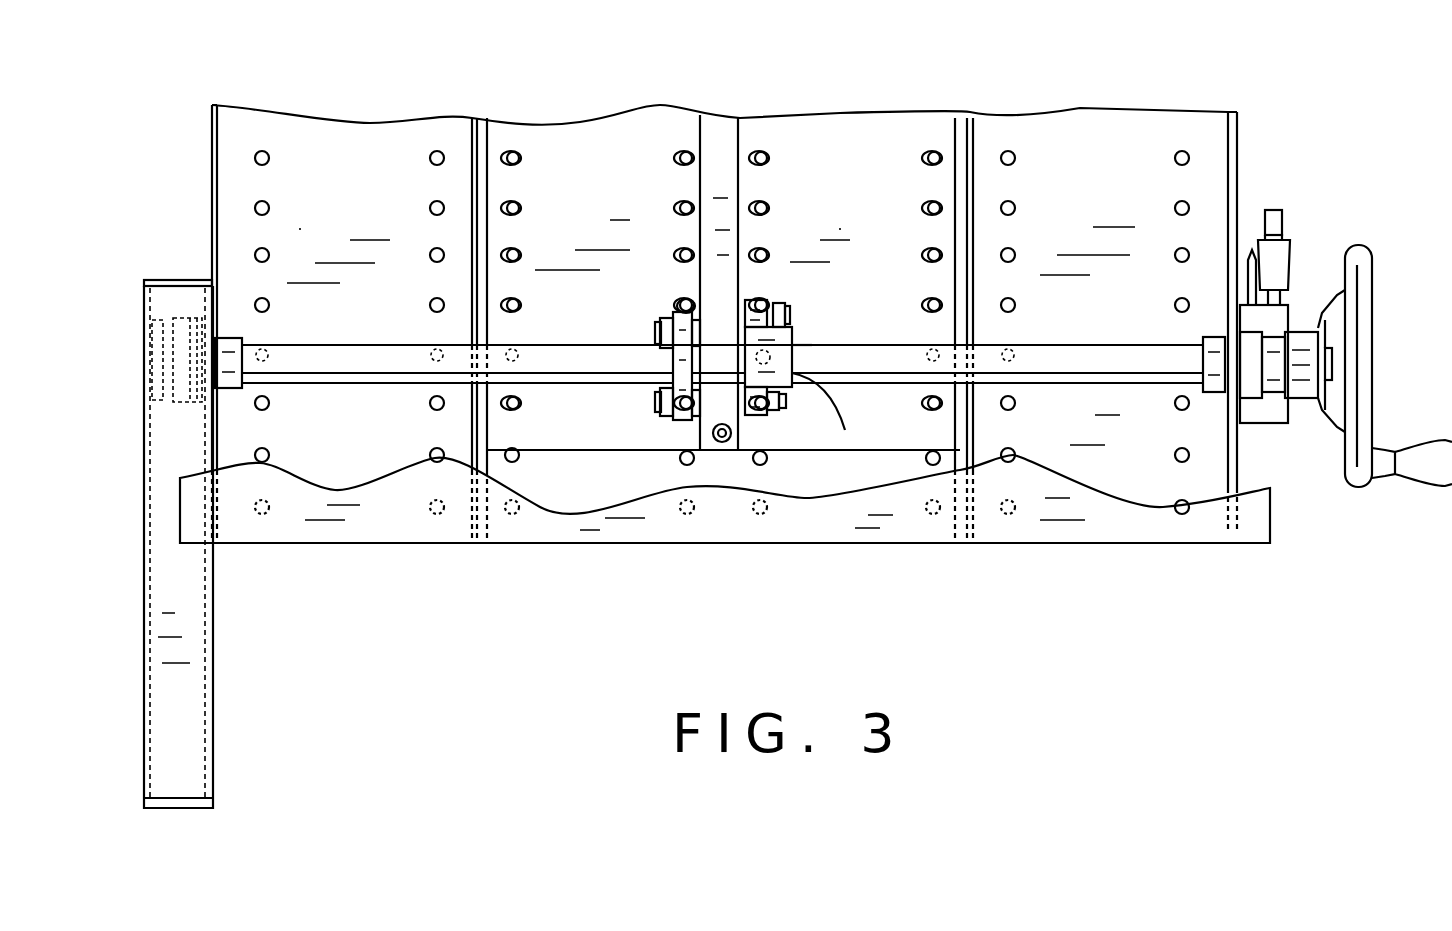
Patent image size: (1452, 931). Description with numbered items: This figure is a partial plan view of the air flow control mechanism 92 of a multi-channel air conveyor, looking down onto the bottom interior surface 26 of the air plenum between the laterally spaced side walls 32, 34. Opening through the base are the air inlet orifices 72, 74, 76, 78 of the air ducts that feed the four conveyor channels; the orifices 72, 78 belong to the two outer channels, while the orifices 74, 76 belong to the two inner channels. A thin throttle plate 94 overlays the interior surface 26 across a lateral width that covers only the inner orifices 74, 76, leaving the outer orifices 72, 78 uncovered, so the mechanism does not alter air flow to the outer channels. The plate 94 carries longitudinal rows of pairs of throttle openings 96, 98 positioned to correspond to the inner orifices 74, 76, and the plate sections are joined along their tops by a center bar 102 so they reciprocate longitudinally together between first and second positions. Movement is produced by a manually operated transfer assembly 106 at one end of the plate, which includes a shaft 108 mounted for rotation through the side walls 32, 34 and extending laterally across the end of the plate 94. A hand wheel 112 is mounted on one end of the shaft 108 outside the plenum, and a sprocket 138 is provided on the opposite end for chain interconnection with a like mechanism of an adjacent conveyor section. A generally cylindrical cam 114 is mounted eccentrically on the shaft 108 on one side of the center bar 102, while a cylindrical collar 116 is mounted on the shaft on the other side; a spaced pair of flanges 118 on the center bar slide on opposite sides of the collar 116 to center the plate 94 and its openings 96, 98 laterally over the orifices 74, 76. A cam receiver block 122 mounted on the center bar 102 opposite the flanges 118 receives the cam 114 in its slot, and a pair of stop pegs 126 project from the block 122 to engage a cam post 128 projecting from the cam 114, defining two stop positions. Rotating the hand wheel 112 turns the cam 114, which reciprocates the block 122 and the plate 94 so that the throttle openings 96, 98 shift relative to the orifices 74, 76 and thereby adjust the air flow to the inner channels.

The bottom interior surface 26 is at (1130, 150).
The side wall 32 is at (212, 200).
The side wall 34 is at (1240, 185).
The air inlet orifice 72 is at (270, 152).
The air inlet orifice 74 is at (517, 150).
The air inlet orifice 76 is at (757, 149).
The air inlet orifice 78 is at (1018, 153).
The air flow control mechanism 92 is at (820, 432).
The throttle plate 94 is at (334, 148).
The throttle opening 96 is at (524, 155).
The throttle opening 98 is at (768, 151).
The center bar 102 is at (718, 125).
The transfer assembly 106 is at (809, 287).
The shaft 108 is at (1113, 355).
The hand wheel 112 is at (1375, 372).
The cam 114 is at (820, 395).
The collar 116 is at (672, 368).
The flanges 118 is at (665, 412).
The cam receiver block 122 is at (760, 300).
The stop pegs 126 is at (762, 300).
The cam post 128 is at (808, 308).
The sprocket 138 is at (165, 318).